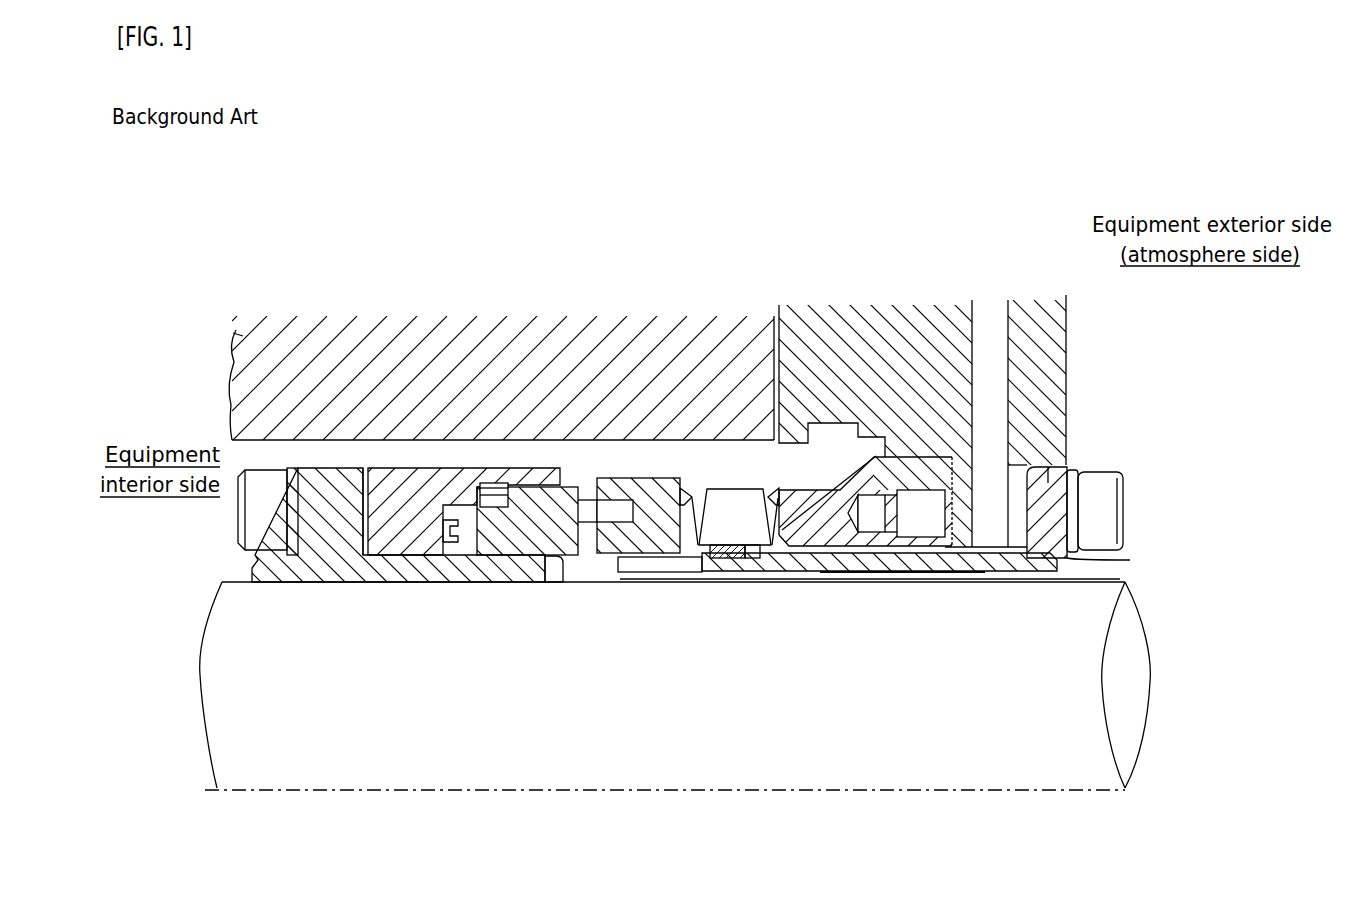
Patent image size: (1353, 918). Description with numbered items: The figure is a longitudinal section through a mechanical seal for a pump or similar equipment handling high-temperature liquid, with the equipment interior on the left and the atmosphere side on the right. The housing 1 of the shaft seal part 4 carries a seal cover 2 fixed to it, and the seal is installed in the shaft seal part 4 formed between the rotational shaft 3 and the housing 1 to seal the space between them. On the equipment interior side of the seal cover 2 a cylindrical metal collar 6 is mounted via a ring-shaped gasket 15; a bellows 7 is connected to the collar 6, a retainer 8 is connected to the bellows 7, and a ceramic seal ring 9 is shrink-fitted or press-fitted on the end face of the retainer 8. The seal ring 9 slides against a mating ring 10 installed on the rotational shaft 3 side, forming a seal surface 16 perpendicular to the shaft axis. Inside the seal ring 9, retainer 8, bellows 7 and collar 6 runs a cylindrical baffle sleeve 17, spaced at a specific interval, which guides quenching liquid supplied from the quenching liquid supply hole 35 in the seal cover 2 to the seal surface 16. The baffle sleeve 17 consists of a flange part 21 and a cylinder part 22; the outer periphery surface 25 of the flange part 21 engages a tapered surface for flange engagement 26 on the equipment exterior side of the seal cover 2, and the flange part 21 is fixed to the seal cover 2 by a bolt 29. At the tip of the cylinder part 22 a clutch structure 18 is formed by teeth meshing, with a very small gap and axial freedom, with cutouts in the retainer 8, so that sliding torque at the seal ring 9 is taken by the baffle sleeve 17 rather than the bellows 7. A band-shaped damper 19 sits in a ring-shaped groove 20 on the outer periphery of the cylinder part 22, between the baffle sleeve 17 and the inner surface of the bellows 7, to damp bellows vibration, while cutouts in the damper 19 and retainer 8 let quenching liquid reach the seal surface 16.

The housing 1 is at (622, 338).
The seal cover 2 is at (877, 328).
The rotational shaft 3 is at (394, 744).
The shaft seal part 4 is at (597, 477).
The collar 6 is at (853, 482).
The bellows 7 is at (740, 498).
The retainer 8 is at (643, 485).
The seal ring 9 is at (595, 553).
The mating ring 10 is at (500, 545).
The ring-shaped gasket 15 is at (955, 488).
The seal surface 16 is at (547, 557).
The baffle sleeve 17 is at (875, 578).
The clutch structure 18 is at (657, 572).
The damper 19 is at (730, 568).
The ring-shaped groove 20 is at (752, 548).
The flange part 21 is at (1130, 560).
The cylinder part 22 is at (983, 572).
The outer periphery surface 25 is at (1028, 467).
The tapered surface for flange engagement 26 is at (1075, 470).
The bolt 29 is at (1126, 500).
The quenching liquid supply hole 35 is at (1000, 330).